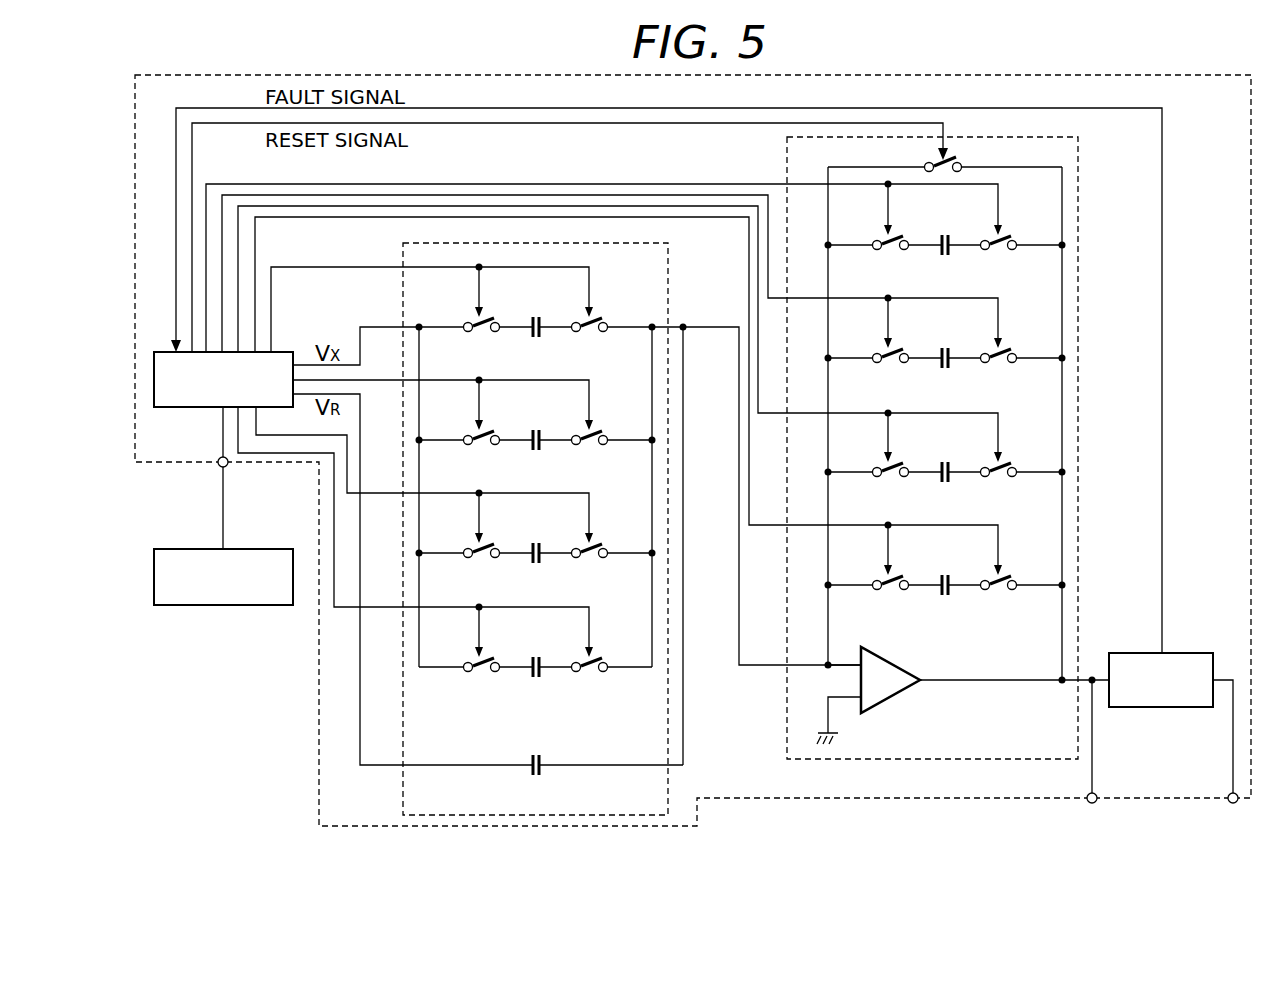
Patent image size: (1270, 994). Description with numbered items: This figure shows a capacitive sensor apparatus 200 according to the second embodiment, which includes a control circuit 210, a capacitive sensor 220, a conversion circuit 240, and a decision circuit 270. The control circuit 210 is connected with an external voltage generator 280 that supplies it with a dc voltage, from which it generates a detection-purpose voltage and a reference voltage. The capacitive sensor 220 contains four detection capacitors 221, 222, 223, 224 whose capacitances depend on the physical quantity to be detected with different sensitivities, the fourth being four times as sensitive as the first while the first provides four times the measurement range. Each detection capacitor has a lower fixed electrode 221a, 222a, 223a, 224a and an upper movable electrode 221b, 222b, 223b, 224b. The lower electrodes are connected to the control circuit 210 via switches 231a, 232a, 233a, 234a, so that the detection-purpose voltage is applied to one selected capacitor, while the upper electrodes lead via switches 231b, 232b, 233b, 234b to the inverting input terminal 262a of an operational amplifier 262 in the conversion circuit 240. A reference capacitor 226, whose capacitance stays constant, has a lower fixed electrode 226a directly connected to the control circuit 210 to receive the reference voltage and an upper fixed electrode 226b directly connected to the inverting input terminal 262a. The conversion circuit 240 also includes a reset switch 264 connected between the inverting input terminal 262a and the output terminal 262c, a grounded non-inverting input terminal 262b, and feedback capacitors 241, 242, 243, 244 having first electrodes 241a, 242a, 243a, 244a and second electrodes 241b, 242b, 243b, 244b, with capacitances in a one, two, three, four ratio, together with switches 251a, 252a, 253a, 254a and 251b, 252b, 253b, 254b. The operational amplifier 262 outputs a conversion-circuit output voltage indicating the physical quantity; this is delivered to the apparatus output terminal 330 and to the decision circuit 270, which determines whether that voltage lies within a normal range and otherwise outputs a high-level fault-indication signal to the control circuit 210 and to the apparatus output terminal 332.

The capacitive sensor apparatus 200 is at (1175, 75).
The control circuit 210 is at (289, 352).
The capacitive sensor 220 is at (669, 262).
The detection capacitor 221 is at (539, 314).
The fixed electrode 221a is at (532, 337).
The movable electrode 221b is at (540, 337).
The detection capacitor 222 is at (539, 427).
The fixed electrode 222a is at (532, 450).
The movable electrode 222b is at (540, 450).
The detection capacitor 223 is at (539, 540).
The fixed electrode 223a is at (532, 563).
The movable electrode 223b is at (540, 563).
The detection capacitor 224 is at (539, 654).
The fixed electrode 224a is at (532, 677).
The movable electrode 224b is at (540, 677).
The reference capacitor 226 is at (539, 752).
The lower fixed electrode 226a is at (530, 772).
The upper fixed electrode 226b is at (544, 772).
The switch 231a is at (478, 340).
The switch 231b is at (590, 340).
The switch 232a is at (478, 453).
The switch 232b is at (590, 453).
The switch 233a is at (478, 566).
The switch 233b is at (590, 566).
The switch 234a is at (478, 680).
The switch 234b is at (590, 680).
The conversion circuit 240 is at (786, 162).
The feedback capacitor 241 is at (948, 232).
The first electrode 241a is at (941, 255).
The second electrode 241b is at (949, 255).
The feedback capacitor 242 is at (948, 345).
The first electrode 242a is at (941, 368).
The second electrode 242b is at (949, 368).
The feedback capacitor 243 is at (948, 459).
The first electrode 243a is at (941, 482).
The second electrode 243b is at (949, 482).
The feedback capacitor 244 is at (948, 572).
The first electrode 244a is at (941, 595).
The second electrode 244b is at (949, 595).
The switch 251a is at (887, 258).
The switch 251b is at (999, 258).
The switch 252a is at (887, 371).
The switch 252b is at (999, 371).
The switch 253a is at (887, 485).
The switch 253b is at (999, 485).
The switch 254a is at (887, 598).
The switch 254b is at (999, 598).
The operational amplifier 262 is at (898, 693).
The inverting input terminal 262a is at (861, 665).
The non-inverting input terminal 262b is at (860, 703).
The output terminal 262c is at (925, 685).
The reset switch 264 is at (926, 160).
The decision circuit 270 is at (1184, 653).
The voltage generator 280 is at (271, 549).
The output terminal 330 is at (1112, 783).
The output terminal 332 is at (1229, 794).